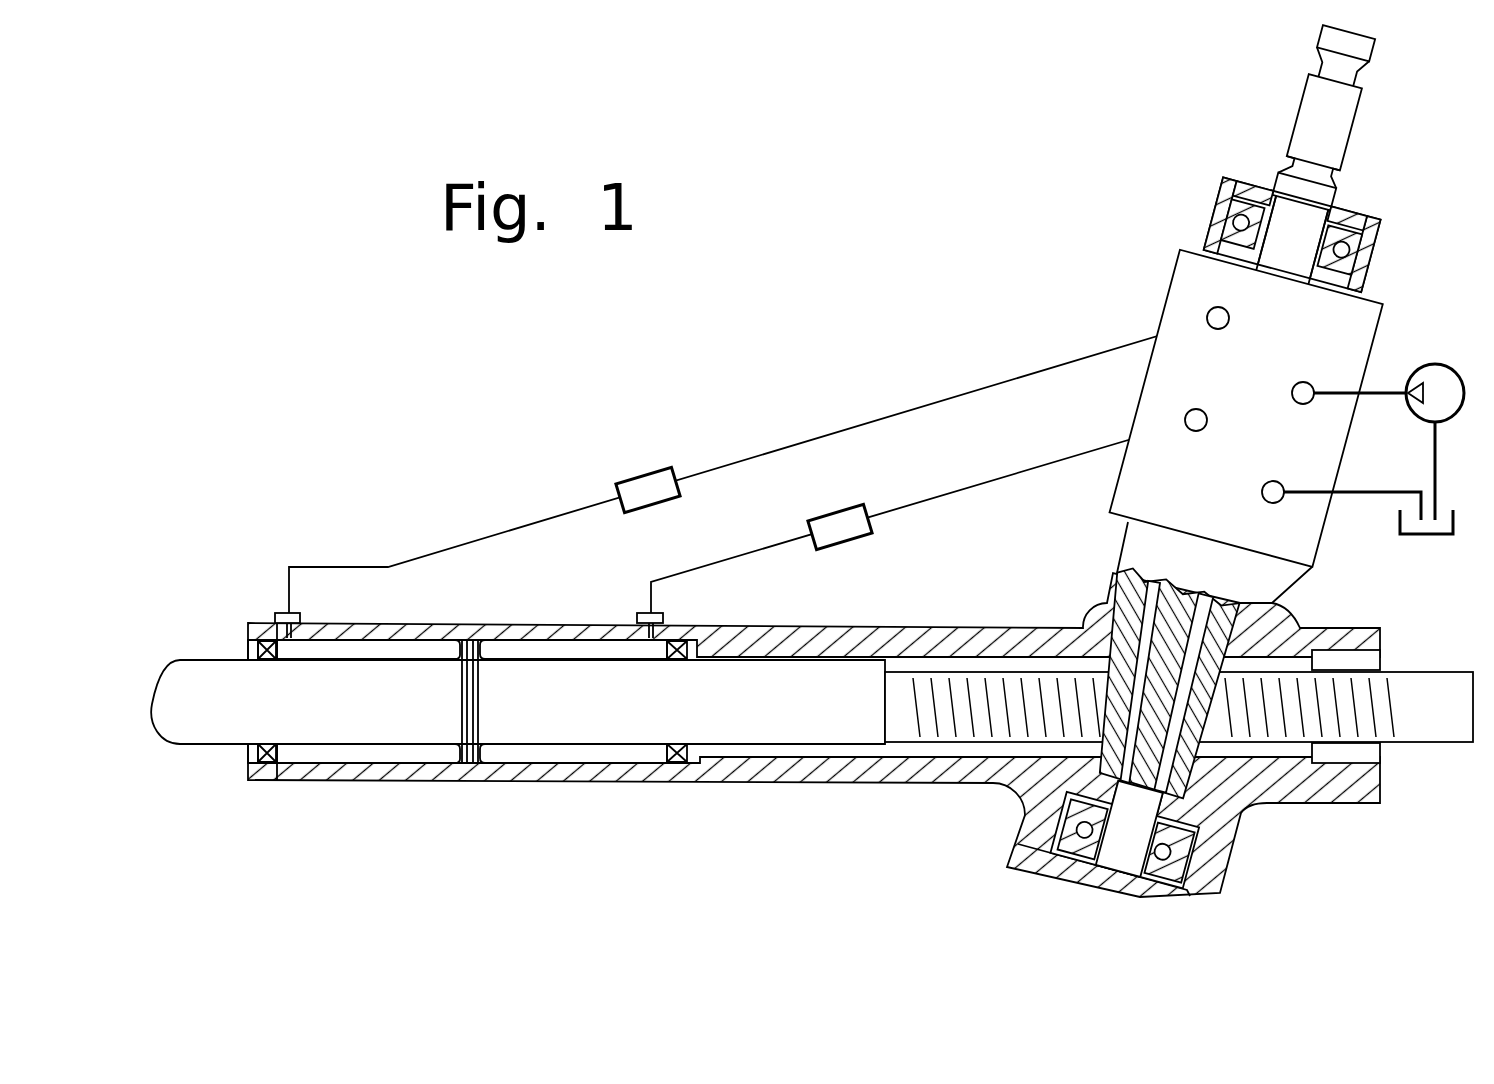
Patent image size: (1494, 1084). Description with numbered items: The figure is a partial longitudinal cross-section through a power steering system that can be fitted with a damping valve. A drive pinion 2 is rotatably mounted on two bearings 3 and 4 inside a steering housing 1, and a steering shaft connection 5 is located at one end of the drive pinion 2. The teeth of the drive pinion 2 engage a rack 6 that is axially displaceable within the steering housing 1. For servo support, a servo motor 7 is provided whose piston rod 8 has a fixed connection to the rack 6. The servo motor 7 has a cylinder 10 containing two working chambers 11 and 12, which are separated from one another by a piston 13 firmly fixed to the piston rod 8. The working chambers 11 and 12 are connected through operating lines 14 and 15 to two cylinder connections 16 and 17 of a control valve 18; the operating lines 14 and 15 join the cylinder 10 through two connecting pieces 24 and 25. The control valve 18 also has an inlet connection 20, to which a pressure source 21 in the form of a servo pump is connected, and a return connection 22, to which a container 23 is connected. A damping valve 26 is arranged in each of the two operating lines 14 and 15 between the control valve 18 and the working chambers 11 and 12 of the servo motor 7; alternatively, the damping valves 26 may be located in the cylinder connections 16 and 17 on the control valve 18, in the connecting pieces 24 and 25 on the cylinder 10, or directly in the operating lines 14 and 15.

The steering housing 1 is at (955, 640).
The drive pinion 2 is at (1212, 595).
The bearing 3 is at (1232, 213).
The bearing 4 is at (1075, 828).
The steering shaft connection 5 is at (1317, 90).
The rack 6 is at (1372, 688).
The servo motor 7 is at (488, 600).
The piston rod 8 is at (557, 680).
The cylinder 10 is at (328, 642).
The working chamber 11 is at (358, 754).
The working chamber 12 is at (585, 754).
The piston 13 is at (478, 764).
The operating line 14 is at (888, 417).
The operating line 15 is at (995, 481).
The cylinder connection 16 is at (1227, 312).
The cylinder connection 17 is at (1193, 409).
The control valve 18 is at (1376, 333).
The inlet connection 20 is at (1296, 384).
The pressure source 21 is at (1455, 413).
The return connection 22 is at (1271, 482).
The container 23 is at (1445, 534).
The connecting piece 24 is at (278, 612).
The connecting piece 25 is at (655, 613).
The damping valve 26 is at (645, 480).